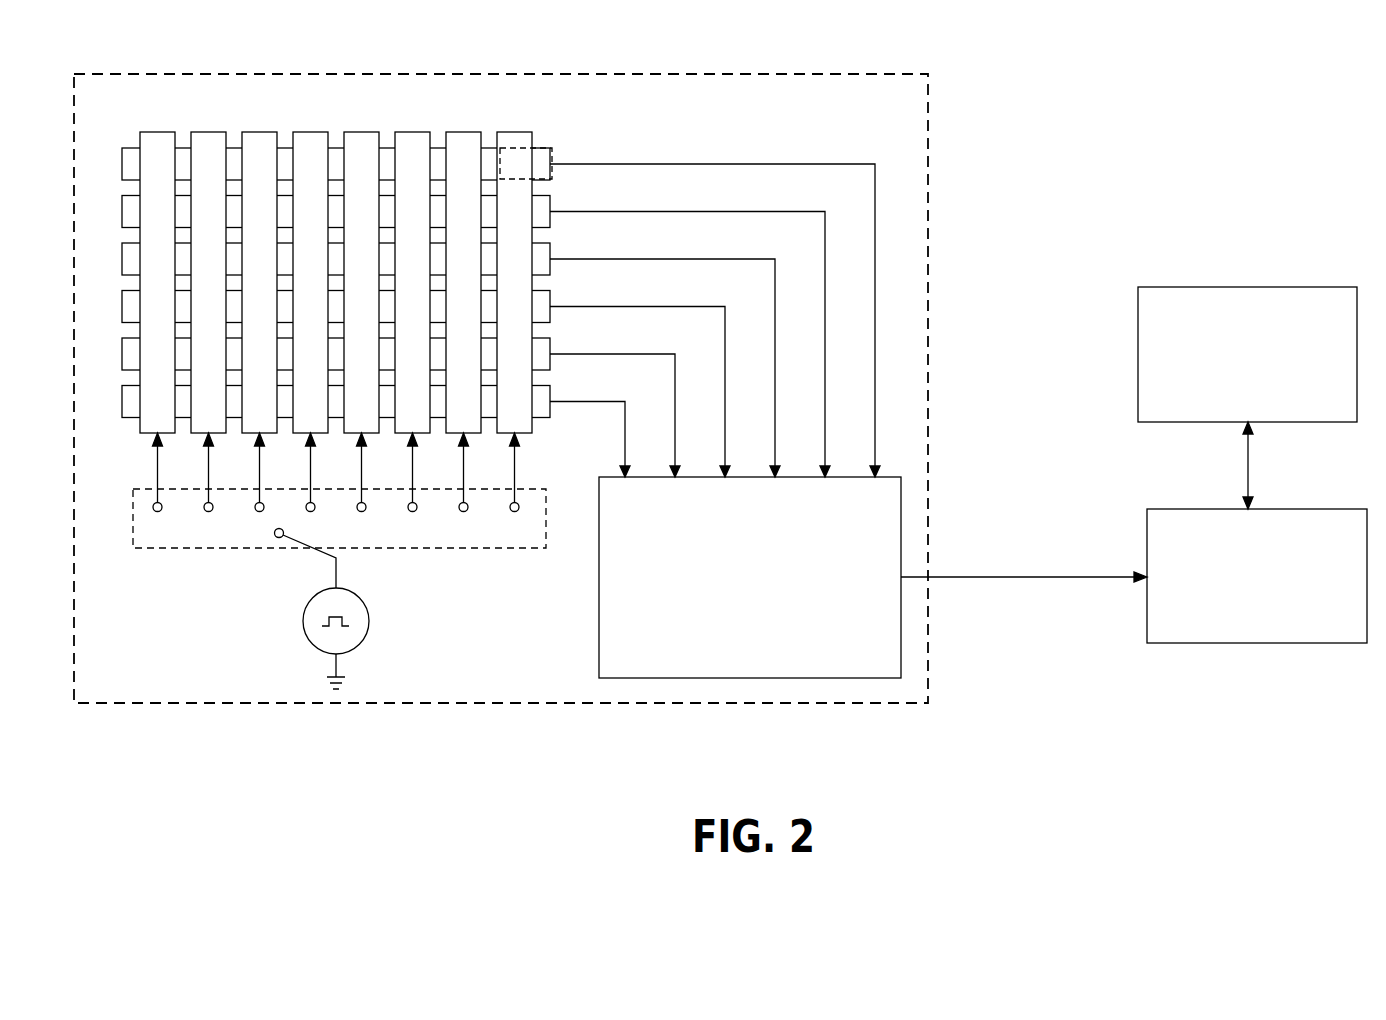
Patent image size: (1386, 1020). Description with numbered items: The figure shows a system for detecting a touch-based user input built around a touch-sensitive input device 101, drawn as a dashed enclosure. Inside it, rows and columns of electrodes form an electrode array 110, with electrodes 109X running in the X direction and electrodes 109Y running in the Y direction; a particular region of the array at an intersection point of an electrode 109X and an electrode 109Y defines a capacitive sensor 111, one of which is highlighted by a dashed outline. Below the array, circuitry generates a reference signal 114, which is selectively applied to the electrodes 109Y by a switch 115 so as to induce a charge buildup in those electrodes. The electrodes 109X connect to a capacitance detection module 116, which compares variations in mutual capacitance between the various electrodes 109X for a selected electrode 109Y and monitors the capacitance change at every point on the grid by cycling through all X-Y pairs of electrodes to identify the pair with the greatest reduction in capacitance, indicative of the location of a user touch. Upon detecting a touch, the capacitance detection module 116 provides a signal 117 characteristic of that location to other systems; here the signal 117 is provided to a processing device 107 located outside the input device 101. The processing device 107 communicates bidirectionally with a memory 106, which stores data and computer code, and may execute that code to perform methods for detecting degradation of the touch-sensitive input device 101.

The touch-sensitive input device 101 is at (928, 98).
The electrode array 110 is at (352, 256).
The electrodes in the X direction 109X is at (116, 150).
The electrodes in the Y direction 109Y is at (528, 120).
The capacitive sensor 111 is at (518, 165).
The switch 115 is at (447, 548).
The reference signal 114 is at (369, 616).
The capacitance detection module 116 is at (750, 577).
The signal 117 is at (1000, 577).
The memory 106 is at (1247, 354).
The processing device 107 is at (1257, 576).